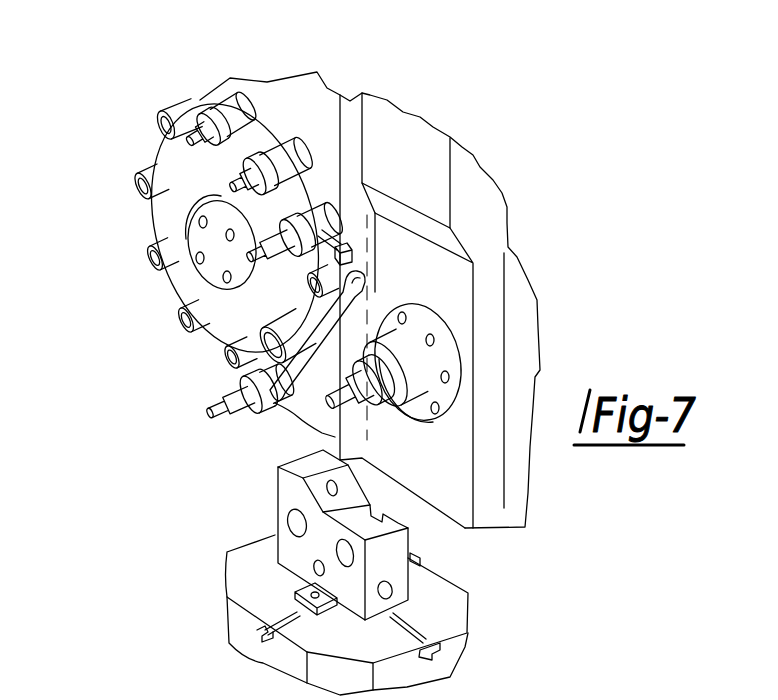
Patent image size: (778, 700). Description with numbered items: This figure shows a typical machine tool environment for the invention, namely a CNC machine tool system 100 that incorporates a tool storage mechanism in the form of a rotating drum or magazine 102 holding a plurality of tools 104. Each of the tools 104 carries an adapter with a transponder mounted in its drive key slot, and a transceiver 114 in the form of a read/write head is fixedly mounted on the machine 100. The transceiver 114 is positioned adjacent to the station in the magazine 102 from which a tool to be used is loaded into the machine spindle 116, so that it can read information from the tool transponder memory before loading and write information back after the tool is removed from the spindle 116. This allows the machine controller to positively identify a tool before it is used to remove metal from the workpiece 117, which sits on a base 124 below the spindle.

The CNC machine tool system 100 is at (507, 150).
The magazine 102 is at (183, 280).
The tools 104 is at (321, 212).
The transceiver 114 is at (340, 240).
The machine spindle 116 is at (420, 353).
The workpiece 117 is at (287, 492).
The base 124 is at (378, 617).